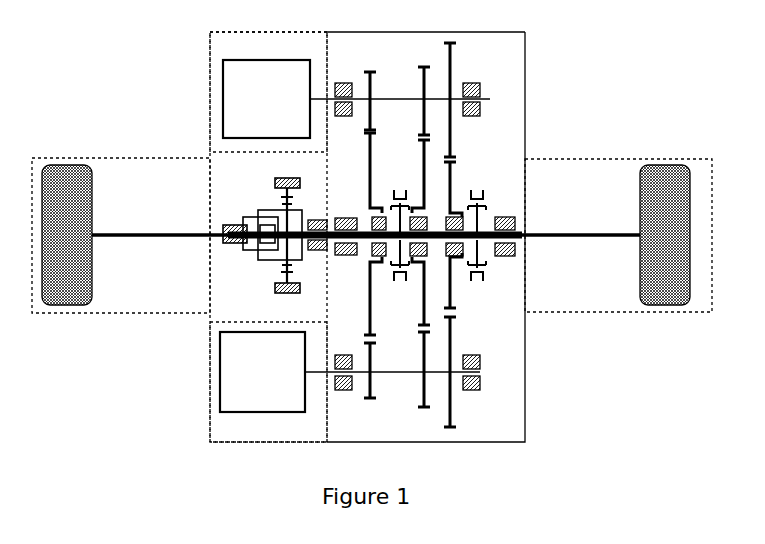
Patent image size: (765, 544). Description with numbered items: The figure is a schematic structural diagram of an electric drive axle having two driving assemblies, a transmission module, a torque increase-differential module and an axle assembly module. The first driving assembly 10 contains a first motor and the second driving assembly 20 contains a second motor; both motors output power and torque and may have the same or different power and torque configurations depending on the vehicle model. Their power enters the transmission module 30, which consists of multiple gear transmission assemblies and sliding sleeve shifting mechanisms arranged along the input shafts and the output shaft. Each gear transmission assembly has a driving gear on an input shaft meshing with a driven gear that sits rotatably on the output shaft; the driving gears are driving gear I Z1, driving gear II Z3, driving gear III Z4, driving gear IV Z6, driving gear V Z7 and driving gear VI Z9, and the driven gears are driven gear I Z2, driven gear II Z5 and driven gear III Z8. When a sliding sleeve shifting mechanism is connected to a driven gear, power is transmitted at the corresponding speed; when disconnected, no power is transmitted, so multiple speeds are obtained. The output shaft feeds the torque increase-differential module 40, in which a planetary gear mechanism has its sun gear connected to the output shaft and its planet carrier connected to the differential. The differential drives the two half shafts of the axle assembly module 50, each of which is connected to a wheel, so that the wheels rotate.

The first driving assembly 10 is at (232, 86).
The second driving assembly 20 is at (232, 382).
The transmission module 30 is at (452, 237).
The torque increase-differential module 40 is at (304, 237).
The axle assembly module 50 is at (372, 212).
The driving gear I Z1 is at (377, 101).
The driven gear I Z2 is at (378, 234).
The driving gear II Z3 is at (379, 370).
The driving gear III Z4 is at (416, 101).
The driven gear II Z5 is at (415, 232).
The driving gear IV Z6 is at (416, 369).
The driving gear V Z7 is at (459, 100).
The driven gear III Z8 is at (457, 235).
The driving gear VI Z9 is at (460, 372).